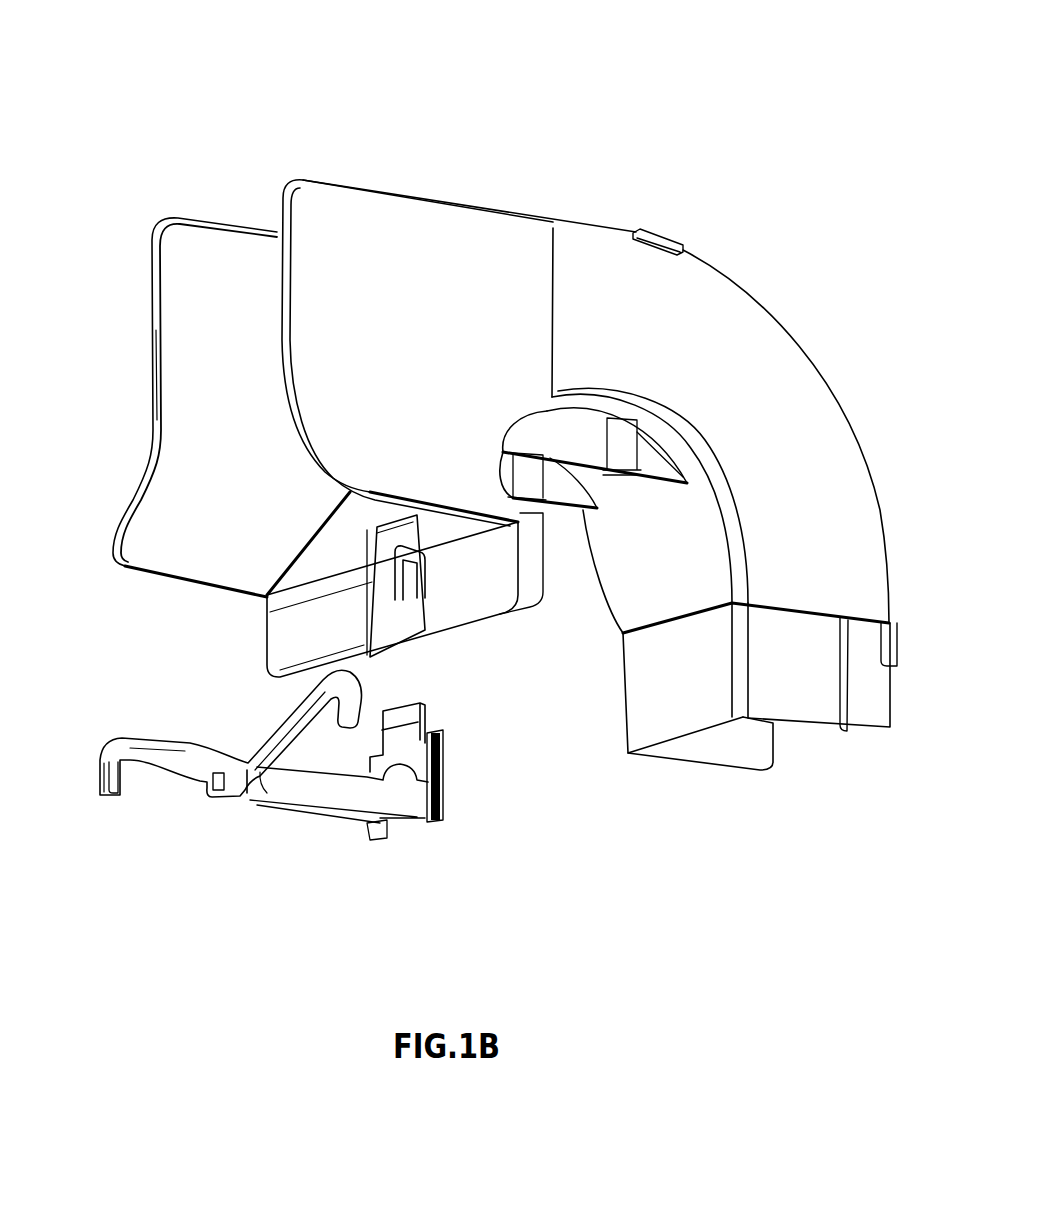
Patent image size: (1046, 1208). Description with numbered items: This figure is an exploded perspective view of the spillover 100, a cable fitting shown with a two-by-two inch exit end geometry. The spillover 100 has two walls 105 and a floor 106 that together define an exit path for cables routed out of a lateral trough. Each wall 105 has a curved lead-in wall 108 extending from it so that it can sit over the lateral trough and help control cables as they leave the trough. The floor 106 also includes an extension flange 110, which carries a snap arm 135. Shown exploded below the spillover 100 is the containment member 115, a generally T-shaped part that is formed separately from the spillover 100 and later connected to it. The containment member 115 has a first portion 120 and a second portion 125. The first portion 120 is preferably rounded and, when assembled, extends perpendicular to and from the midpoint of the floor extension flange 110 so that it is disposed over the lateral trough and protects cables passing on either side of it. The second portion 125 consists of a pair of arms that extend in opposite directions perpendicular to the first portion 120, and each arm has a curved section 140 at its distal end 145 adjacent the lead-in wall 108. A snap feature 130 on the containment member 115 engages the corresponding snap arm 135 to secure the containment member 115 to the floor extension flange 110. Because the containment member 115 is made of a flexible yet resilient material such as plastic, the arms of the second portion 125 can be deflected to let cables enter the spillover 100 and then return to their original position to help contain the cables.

The spillover 100 is at (549, 178).
The wall 105 is at (198, 243).
The floor 106 is at (343, 538).
The curved lead-in wall 108 is at (440, 452).
The extension flange 110 is at (493, 580).
The containment member 115 is at (229, 820).
The first portion 120 is at (333, 803).
The second portion 125 is at (173, 770).
The snap feature 130 is at (418, 714).
The snap arm 135 is at (372, 636).
The curved section 140 is at (120, 737).
The distal end 145 is at (100, 810).